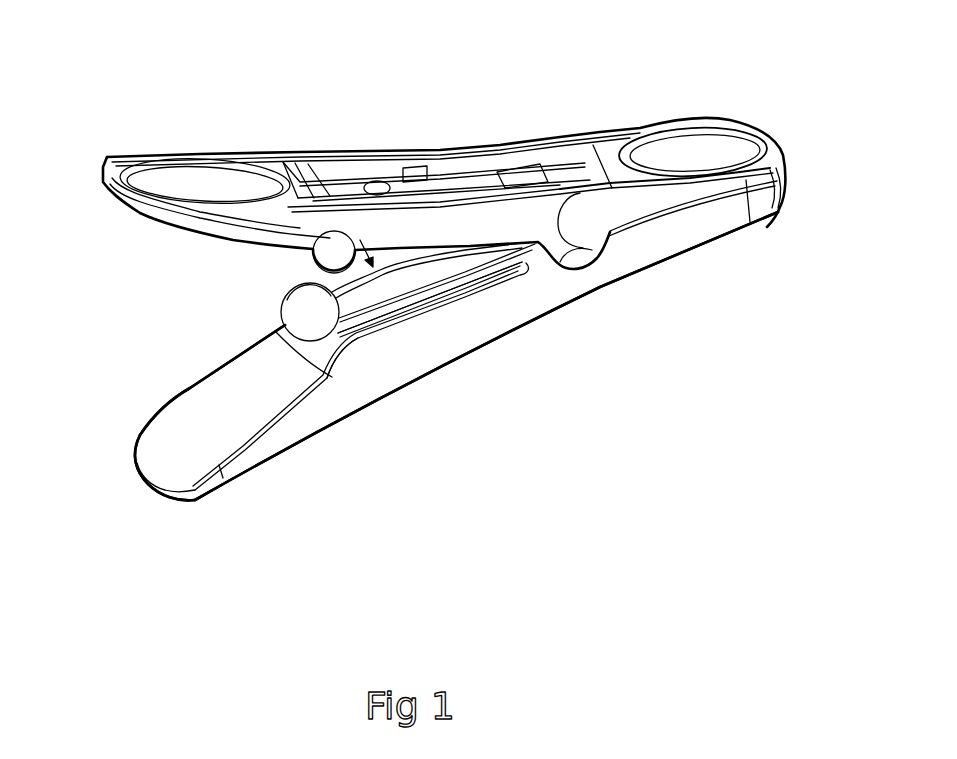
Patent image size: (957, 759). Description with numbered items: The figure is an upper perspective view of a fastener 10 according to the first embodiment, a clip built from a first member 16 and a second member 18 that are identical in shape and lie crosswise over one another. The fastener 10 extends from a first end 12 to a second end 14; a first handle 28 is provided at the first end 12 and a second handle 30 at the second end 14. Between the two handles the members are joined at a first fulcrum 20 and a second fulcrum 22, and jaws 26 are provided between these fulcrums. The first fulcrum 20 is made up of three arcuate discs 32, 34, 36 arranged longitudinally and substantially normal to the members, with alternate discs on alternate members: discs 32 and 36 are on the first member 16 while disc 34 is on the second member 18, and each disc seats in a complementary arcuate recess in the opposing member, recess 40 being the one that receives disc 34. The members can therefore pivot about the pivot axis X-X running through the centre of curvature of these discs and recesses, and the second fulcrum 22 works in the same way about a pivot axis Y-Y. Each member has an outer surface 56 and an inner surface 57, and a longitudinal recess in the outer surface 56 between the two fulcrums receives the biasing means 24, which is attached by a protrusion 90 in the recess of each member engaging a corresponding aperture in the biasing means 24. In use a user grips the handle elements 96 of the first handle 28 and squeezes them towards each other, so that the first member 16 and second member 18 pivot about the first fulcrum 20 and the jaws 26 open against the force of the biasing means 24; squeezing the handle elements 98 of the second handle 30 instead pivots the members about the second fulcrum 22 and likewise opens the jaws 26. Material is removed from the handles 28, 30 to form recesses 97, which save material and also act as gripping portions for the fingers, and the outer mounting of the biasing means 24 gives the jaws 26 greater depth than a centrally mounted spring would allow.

The fastener 10 is at (470, 296).
The first end 12 is at (125, 388).
The second end 14 is at (793, 158).
The first member 16 is at (480, 325).
The second member 18 is at (428, 228).
The first fulcrum 20 is at (347, 353).
The second fulcrum 22 is at (580, 193).
The biasing means 24 is at (480, 185).
The jaws 26 is at (332, 257).
The first handle 28 is at (162, 177).
The second handle 30 is at (735, 147).
The arcuate disc 32 is at (388, 328).
The arcuate disc 34 is at (318, 317).
The arcuate disc 36 is at (216, 183).
The complementary recess 40 is at (220, 375).
The outer surface 56 is at (565, 185).
The inner surface 57 is at (523, 277).
The protrusion 90 is at (377, 182).
The handle elements 96 is at (115, 188).
The recesses 97 is at (708, 147).
The handle elements 98 is at (785, 132).
The pivot axis X-X x is at (348, 342).
The pivot axis Y- Y is at (493, 175).